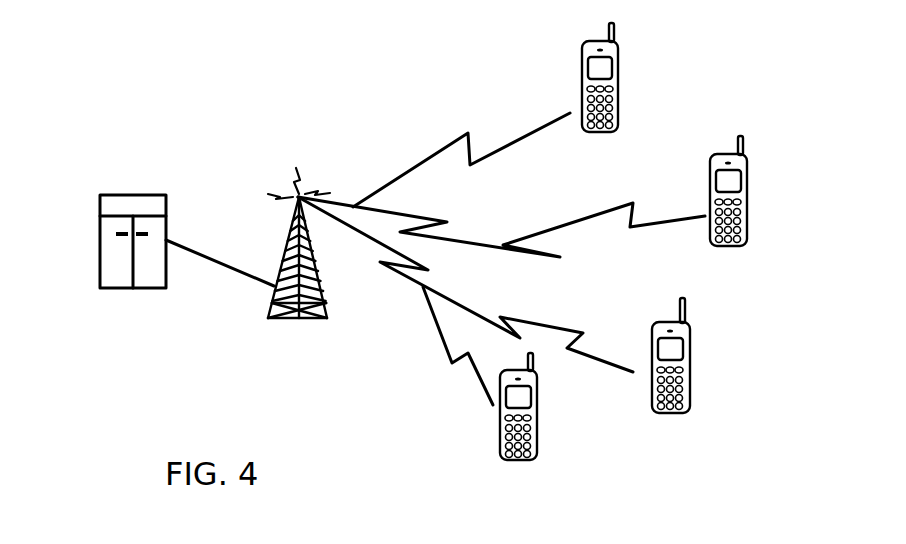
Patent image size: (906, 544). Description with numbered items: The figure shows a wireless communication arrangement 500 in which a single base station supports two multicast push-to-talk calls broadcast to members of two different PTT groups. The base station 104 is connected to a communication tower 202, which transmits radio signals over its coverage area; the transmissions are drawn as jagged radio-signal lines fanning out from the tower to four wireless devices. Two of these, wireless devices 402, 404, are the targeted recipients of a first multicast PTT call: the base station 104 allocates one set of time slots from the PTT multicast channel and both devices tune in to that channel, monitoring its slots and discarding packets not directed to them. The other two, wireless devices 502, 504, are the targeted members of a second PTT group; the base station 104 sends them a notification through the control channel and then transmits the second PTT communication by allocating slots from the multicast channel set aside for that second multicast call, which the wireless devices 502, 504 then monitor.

The wireless communication system 500 is at (242, 96).
The base station (BS) 104 is at (155, 195).
The communication tower 202 is at (291, 250).
The wireless device 402 is at (618, 100).
The wireless device 404 is at (748, 188).
The wireless device 504 is at (690, 382).
The wireless device 502 is at (500, 440).